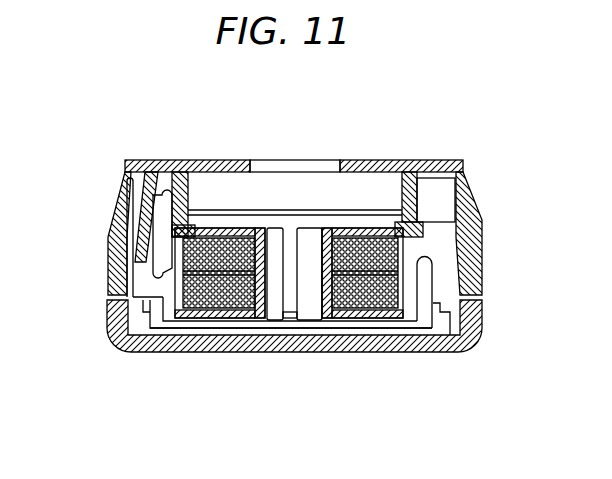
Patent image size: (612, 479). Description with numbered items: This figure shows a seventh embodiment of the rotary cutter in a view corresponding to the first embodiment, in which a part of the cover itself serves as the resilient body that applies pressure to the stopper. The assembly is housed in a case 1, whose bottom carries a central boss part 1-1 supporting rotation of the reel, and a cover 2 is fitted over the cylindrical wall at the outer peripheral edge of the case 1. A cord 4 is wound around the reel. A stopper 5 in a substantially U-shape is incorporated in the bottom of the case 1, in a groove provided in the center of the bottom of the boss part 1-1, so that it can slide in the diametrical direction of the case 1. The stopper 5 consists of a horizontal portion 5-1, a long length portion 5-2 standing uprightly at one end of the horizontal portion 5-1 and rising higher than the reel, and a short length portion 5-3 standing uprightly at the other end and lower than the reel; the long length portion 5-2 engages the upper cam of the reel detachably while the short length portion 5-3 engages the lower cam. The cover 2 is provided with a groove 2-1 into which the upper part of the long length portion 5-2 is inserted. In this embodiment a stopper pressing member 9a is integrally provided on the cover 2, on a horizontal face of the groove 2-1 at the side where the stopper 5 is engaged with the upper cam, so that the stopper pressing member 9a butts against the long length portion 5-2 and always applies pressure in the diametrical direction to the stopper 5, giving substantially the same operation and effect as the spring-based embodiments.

The case 1 is at (238, 338).
The boss part 1-1 is at (305, 237).
The cover 2 is at (110, 220).
The groove 2-1 is at (158, 161).
The cord 4 is at (375, 300).
The stopper 5 is at (332, 328).
The horizontal portion 5-1 is at (185, 330).
The long length portion 5-2 is at (157, 294).
The short length portion 5-3 is at (423, 285).
The stopper pressing member 9a is at (138, 199).